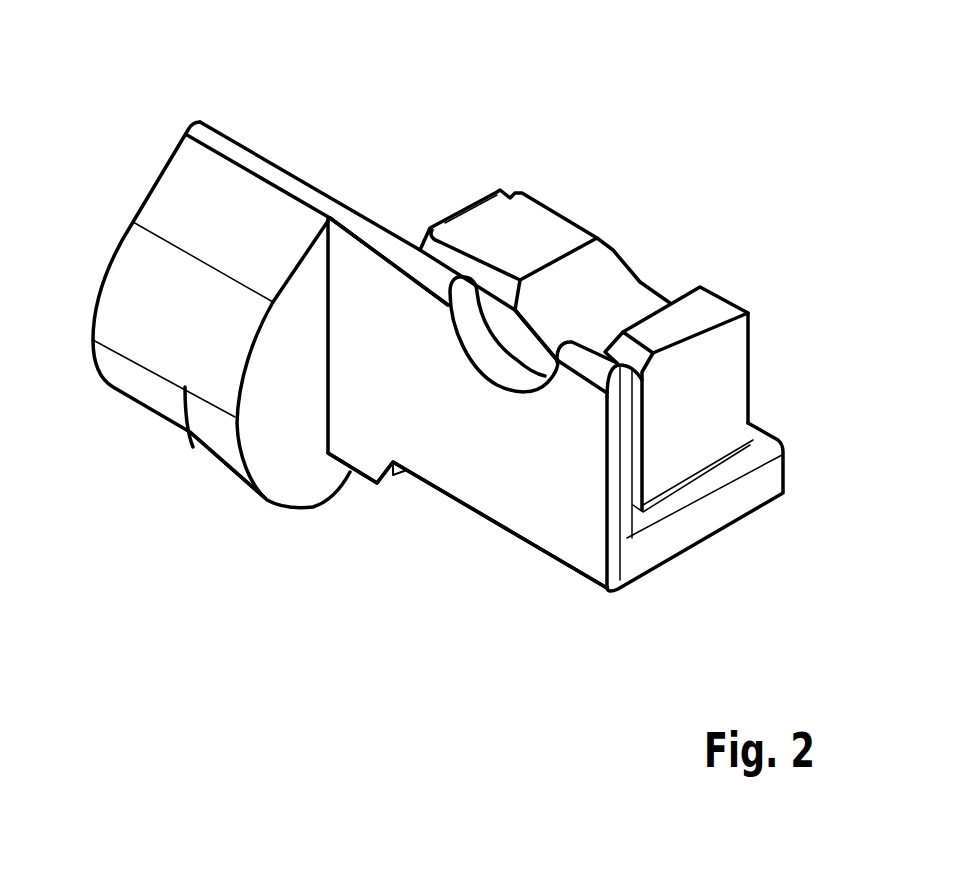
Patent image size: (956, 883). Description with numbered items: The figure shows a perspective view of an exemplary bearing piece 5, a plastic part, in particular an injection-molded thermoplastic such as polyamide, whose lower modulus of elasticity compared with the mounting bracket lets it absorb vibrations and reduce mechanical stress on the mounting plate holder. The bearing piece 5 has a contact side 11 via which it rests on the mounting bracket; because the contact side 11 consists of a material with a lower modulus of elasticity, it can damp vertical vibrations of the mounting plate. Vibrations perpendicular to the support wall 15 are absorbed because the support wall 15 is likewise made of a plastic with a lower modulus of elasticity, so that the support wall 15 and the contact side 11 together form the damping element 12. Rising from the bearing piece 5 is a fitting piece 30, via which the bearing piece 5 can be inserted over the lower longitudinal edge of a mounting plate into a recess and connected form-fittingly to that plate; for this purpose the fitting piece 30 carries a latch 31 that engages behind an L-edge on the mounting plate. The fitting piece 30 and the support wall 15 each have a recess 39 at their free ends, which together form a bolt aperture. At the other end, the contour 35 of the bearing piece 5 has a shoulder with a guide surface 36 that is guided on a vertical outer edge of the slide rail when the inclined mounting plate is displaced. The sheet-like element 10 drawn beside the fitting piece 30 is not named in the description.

The bearing piece 5 is at (622, 85).
The base plate / sheet element 10 is at (643, 517).
The contact side 11 is at (461, 509).
The damping element 12 is at (715, 515).
The support wall 15 is at (567, 523).
The fitting piece 30 is at (720, 385).
The latch 31 is at (463, 207).
The contour 35 is at (150, 330).
The guide surface 36 is at (190, 450).
The recess 39 is at (630, 292).